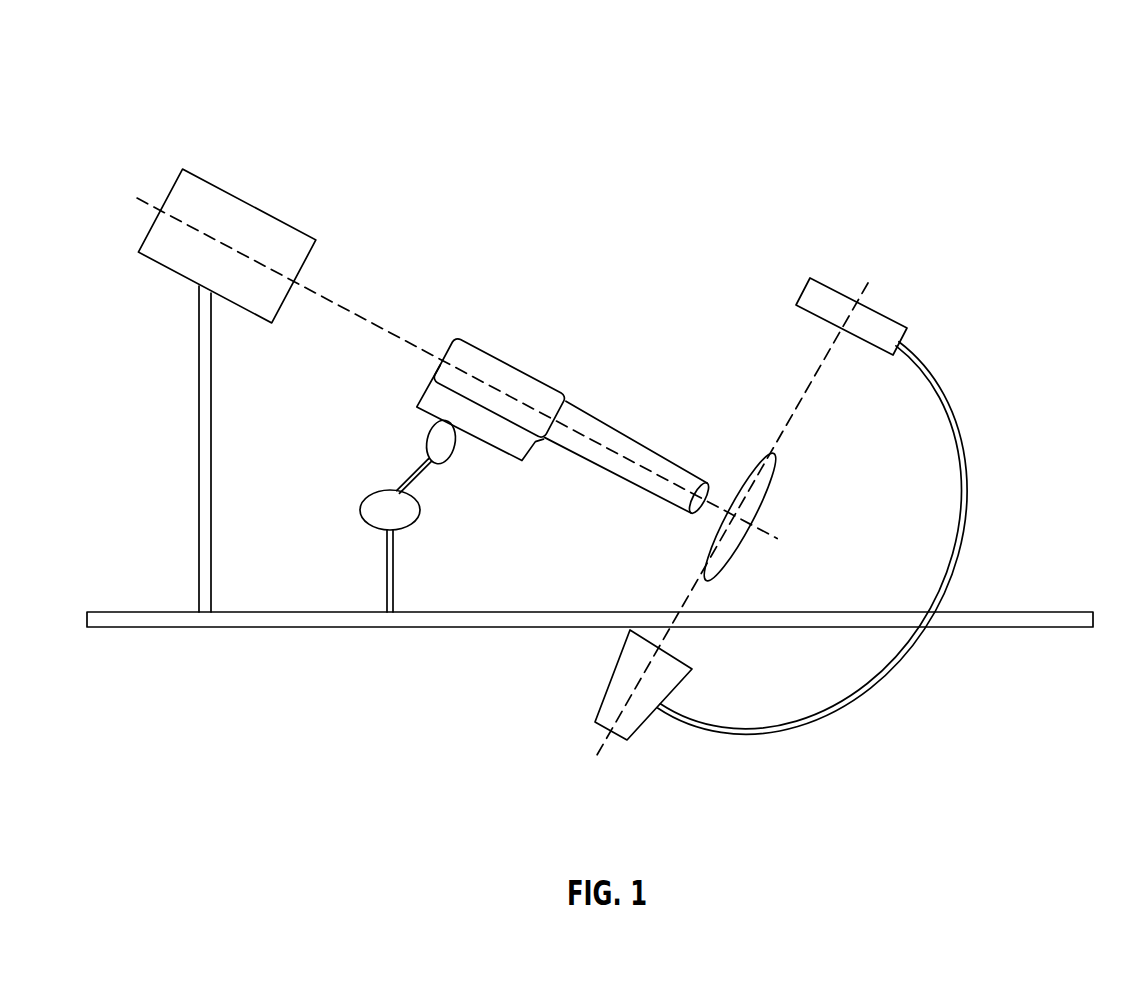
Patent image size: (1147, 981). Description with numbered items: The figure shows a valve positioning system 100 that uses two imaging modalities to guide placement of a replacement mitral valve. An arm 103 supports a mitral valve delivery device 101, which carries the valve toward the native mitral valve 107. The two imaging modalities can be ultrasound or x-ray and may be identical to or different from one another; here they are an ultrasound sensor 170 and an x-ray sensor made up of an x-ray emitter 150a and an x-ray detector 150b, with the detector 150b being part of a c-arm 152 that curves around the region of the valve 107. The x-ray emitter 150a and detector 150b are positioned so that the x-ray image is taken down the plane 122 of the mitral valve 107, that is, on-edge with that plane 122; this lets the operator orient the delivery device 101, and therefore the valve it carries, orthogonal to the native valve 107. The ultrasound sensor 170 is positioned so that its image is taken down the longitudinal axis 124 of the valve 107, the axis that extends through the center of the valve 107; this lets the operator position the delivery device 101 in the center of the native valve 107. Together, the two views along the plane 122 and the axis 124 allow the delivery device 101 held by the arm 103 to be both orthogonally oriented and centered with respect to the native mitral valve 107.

The valve positioning system 100 is at (1038, 69).
The mitral valve delivery device 101 is at (543, 382).
The arm 103 is at (385, 593).
The mitral valve 107 is at (772, 477).
The plane of the mitral valve 122 is at (817, 377).
The longitudinal axis of the valve 124 is at (353, 312).
The x-ray emitter 150a is at (600, 708).
The x-ray detector 150b is at (887, 313).
The c-arm 152 is at (960, 457).
The ultrasound sensor 170 is at (293, 246).